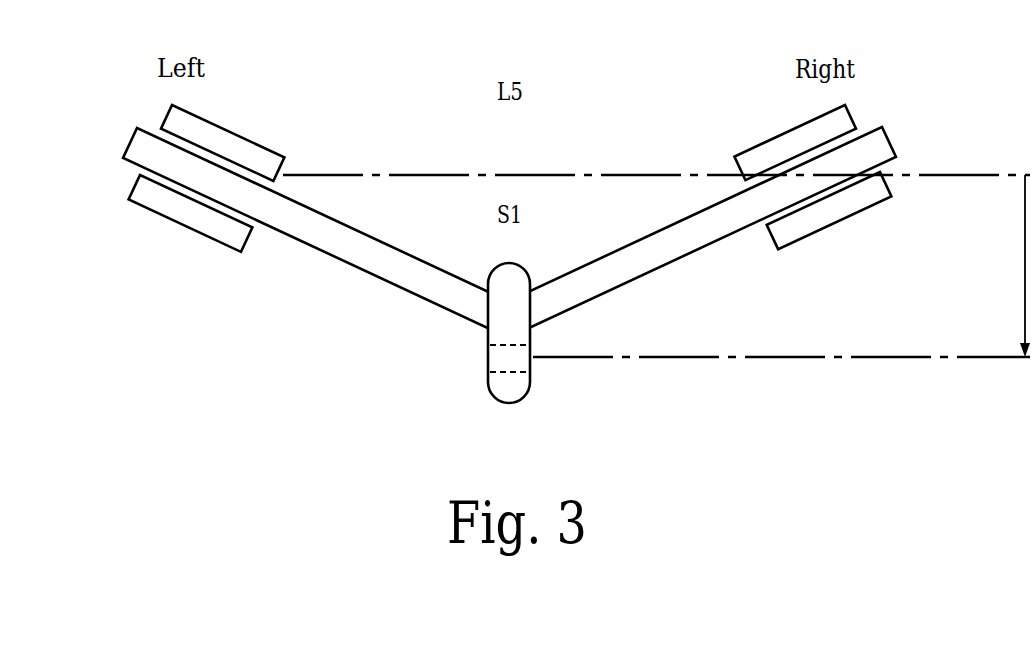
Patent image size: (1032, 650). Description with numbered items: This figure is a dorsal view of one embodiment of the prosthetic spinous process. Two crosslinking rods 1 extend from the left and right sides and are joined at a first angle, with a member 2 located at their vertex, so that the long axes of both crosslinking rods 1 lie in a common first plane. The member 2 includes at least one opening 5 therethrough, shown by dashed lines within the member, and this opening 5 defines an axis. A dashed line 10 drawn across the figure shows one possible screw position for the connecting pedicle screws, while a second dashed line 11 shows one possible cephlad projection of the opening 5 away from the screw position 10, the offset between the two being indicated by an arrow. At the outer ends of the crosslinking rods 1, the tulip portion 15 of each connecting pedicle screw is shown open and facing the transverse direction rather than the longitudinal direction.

The crosslinking rods 1 is at (648, 232).
The member 2 is at (500, 331).
The opening 5 is at (518, 372).
The dashed line (screw position) 10 is at (977, 173).
The dashed line (cephlad projection) 11 is at (960, 358).
The tulip portion 15 is at (241, 128).